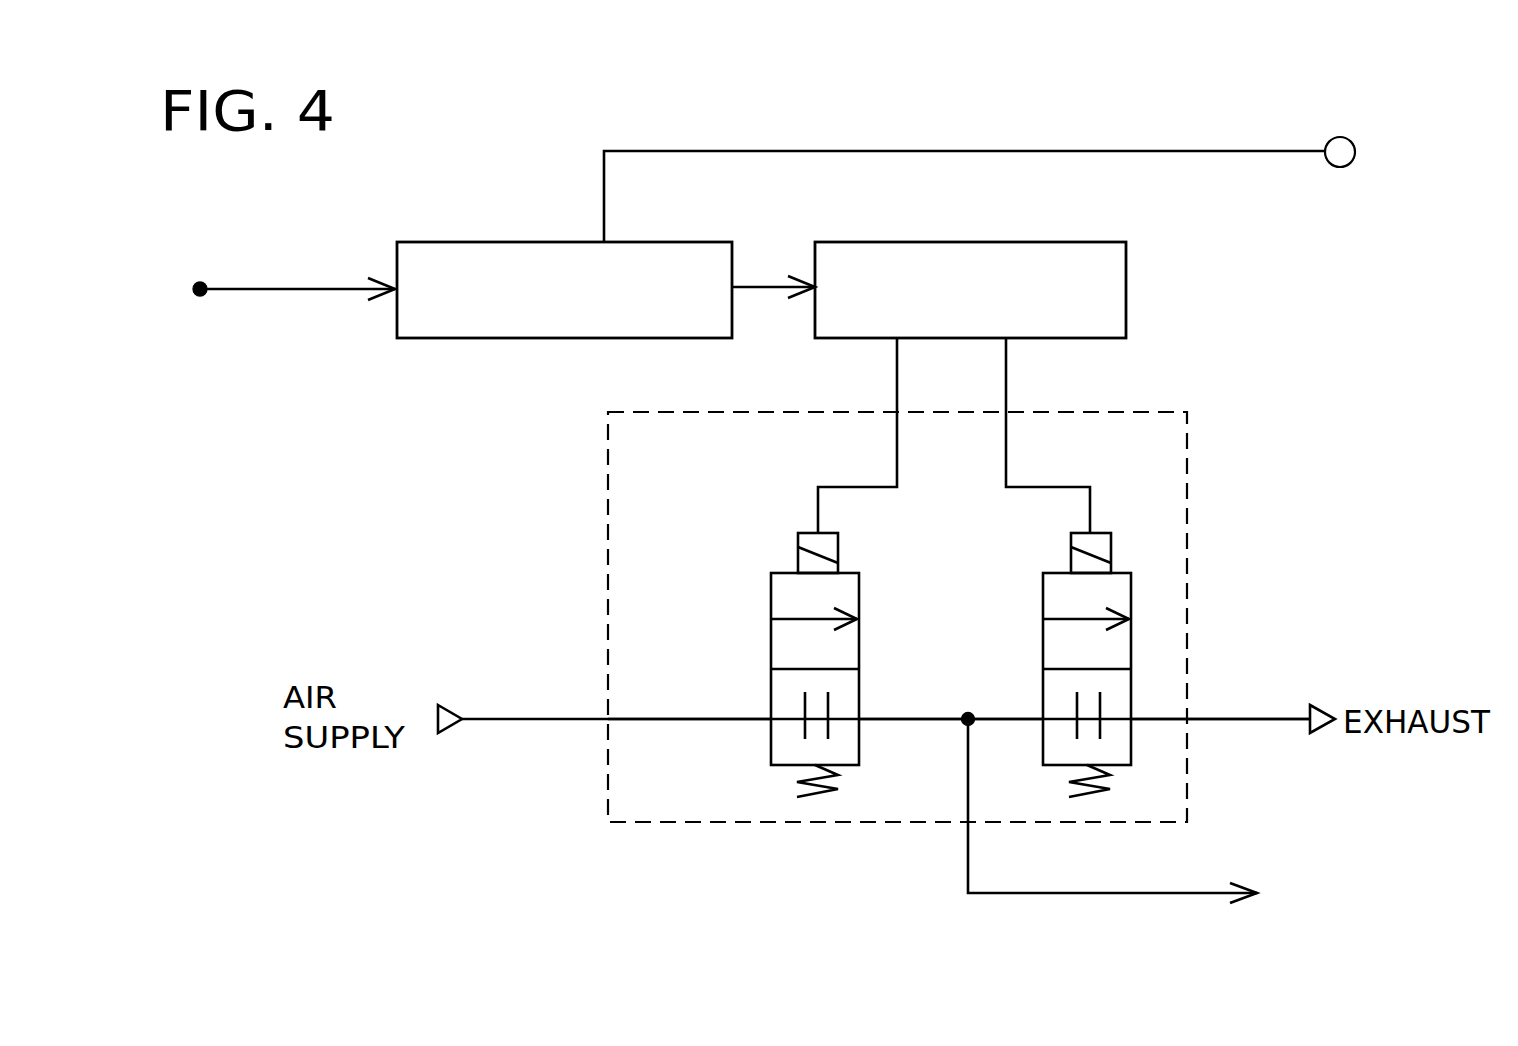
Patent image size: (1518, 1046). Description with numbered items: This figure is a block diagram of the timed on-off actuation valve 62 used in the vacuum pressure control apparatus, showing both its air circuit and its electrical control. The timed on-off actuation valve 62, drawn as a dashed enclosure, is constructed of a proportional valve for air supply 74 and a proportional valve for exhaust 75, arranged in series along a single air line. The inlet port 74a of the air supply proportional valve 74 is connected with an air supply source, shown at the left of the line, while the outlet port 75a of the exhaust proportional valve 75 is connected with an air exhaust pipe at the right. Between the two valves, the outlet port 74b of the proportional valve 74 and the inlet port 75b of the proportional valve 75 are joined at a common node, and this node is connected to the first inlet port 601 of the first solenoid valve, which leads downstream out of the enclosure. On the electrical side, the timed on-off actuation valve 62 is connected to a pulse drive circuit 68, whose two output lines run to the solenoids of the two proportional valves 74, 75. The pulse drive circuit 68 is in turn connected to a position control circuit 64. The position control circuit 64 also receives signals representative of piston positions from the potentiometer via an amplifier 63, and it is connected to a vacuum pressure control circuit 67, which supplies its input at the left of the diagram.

The timed on-off actuation valve 62 is at (1188, 455).
The amplifier 63 is at (1343, 150).
The position control circuit 64 is at (694, 242).
The vacuum pressure control circuit 67 is at (306, 289).
The pulse drive circuit 68 is at (1038, 242).
The proportional valve for air supply 74 is at (786, 600).
The inlet port of the air supply proportional valve 74a is at (682, 721).
The outlet port of the air supply proportional valve 74b is at (911, 718).
The proportional valve for exhaust 75 is at (1120, 600).
The outlet port of the exhaust proportional valve 75a is at (1255, 719).
The inlet port of the exhaust proportional valve 75b is at (1008, 718).
The first inlet port 601 is at (1183, 893).